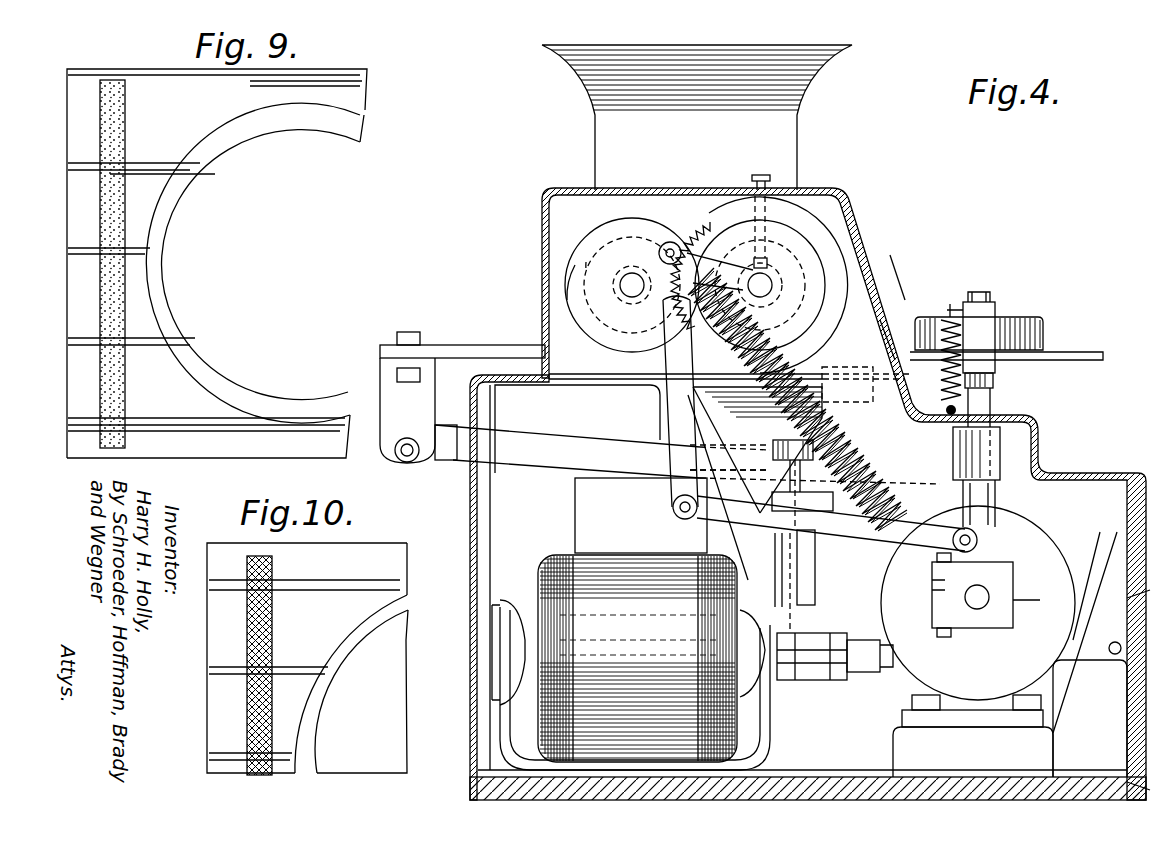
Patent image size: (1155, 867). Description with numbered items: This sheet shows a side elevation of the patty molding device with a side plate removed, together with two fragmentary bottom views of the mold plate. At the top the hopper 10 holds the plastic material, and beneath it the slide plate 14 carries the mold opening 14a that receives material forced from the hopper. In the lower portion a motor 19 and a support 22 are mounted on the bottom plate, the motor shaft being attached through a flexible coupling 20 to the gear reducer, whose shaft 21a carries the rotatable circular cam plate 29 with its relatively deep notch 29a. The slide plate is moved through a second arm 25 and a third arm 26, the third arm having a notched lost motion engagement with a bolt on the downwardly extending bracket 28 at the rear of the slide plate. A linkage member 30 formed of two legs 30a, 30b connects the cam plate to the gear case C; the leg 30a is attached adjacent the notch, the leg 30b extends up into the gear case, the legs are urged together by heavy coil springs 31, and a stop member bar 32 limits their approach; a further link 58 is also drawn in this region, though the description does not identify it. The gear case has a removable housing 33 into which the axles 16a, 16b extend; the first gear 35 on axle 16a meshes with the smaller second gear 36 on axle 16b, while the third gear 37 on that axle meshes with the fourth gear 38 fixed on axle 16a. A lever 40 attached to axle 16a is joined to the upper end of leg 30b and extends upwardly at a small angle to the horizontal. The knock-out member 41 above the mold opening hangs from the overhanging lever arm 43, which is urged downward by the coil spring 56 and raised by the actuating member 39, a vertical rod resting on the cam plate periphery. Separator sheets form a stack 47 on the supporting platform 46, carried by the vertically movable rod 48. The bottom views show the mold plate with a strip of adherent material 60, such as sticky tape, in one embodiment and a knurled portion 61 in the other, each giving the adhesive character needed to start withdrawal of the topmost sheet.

In FIG. 4, the hopper 10 is at (780, 108).
In FIG. 9, the slide plate 14 is at (338, 112).
In FIG. 10, the slide plate 14 is at (362, 564).
In FIG. 4, the slide plate 14 is at (1068, 368).
In FIG. 9, the mold opening 14a is at (352, 140).
In FIG. 10, the mold opening 14a is at (353, 653).
In FIG. 4, the axle 16a is at (762, 285).
In FIG. 4, the axle 16b is at (623, 277).
In FIG. 4, the motor 19 is at (636, 648).
In FIG. 4, the flexible coupling 20 is at (805, 690).
In FIG. 4, the gear reducer shaft 21a is at (977, 612).
In FIG. 4, the support 22 is at (846, 745).
In FIG. 4, the second arm 25 is at (760, 541).
In FIG. 4, the third arm 26 is at (550, 440).
In FIG. 4, the bracket 28 is at (425, 403).
In FIG. 4, the cam plate 29 is at (1060, 568).
In FIG. 4, the notch 29a is at (990, 506).
In FIG. 4, the linkage member 30 is at (837, 541).
In FIG. 4, the leg 30a is at (864, 540).
In FIG. 4, the leg 30b is at (660, 390).
In FIG. 4, the coil springs 31 is at (850, 466).
In FIG. 4, the stop member bar 32 is at (668, 436).
In FIG. 4, the housing 33 is at (884, 309).
In FIG. 4, the first gear 35 is at (815, 225).
In FIG. 4, the second gear 36 is at (590, 271).
In FIG. 4, the third gear 37 is at (573, 300).
In FIG. 4, the fourth gear 38 is at (822, 291).
In FIG. 4, the actuating member 39 is at (986, 406).
In FIG. 4, the lever 40 is at (712, 234).
In FIG. 4, the knock-out member 41 is at (1040, 334).
In FIG. 4, the lever arm 43 is at (985, 325).
In FIG. 4, the supporting platform 46 is at (850, 408).
In FIG. 4, the stack 47 is at (756, 450).
In FIG. 4, the rod 48 is at (808, 590).
In FIG. 4, the coil spring 56 is at (940, 370).
In FIG. 4, the link 58 is at (782, 557).
In FIG. 9, the adherent material 60 is at (116, 92).
In FIG. 10, the knurled portion 61 is at (248, 577).
In FIG. 4, the gear case C is at (862, 246).